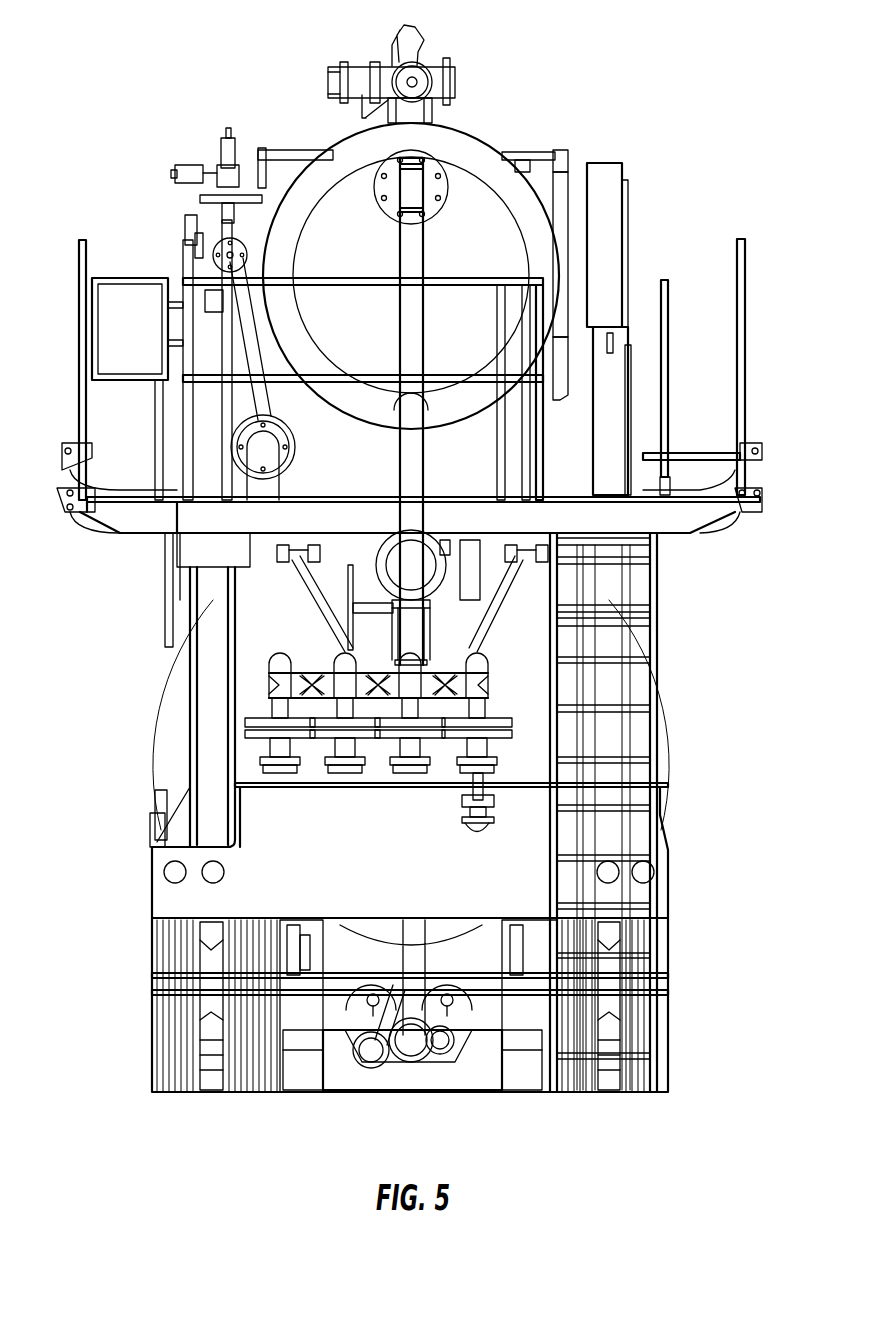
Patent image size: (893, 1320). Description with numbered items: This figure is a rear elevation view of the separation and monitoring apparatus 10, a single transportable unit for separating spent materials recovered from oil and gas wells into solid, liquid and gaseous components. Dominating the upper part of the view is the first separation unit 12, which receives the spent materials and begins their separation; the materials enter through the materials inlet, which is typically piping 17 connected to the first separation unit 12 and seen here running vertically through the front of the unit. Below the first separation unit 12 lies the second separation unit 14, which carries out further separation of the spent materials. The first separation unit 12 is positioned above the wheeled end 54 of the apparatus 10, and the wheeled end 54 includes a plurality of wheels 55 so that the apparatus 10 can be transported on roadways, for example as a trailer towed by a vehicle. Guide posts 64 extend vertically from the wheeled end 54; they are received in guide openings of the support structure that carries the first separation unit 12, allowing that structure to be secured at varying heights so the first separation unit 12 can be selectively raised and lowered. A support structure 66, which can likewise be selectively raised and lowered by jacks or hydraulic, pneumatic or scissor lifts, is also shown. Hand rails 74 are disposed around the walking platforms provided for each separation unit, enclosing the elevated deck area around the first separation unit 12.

The separation and monitoring apparatus 10 is at (655, 100).
The first separation unit 12 is at (477, 136).
The second separation unit 14 is at (612, 680).
The piping 17 is at (418, 242).
The wheeled end 54 is at (382, 863).
The wheels 55 is at (175, 1038).
The guide posts 64 is at (520, 727).
The support structure 66 is at (598, 513).
The hand rails 74 is at (78, 350).